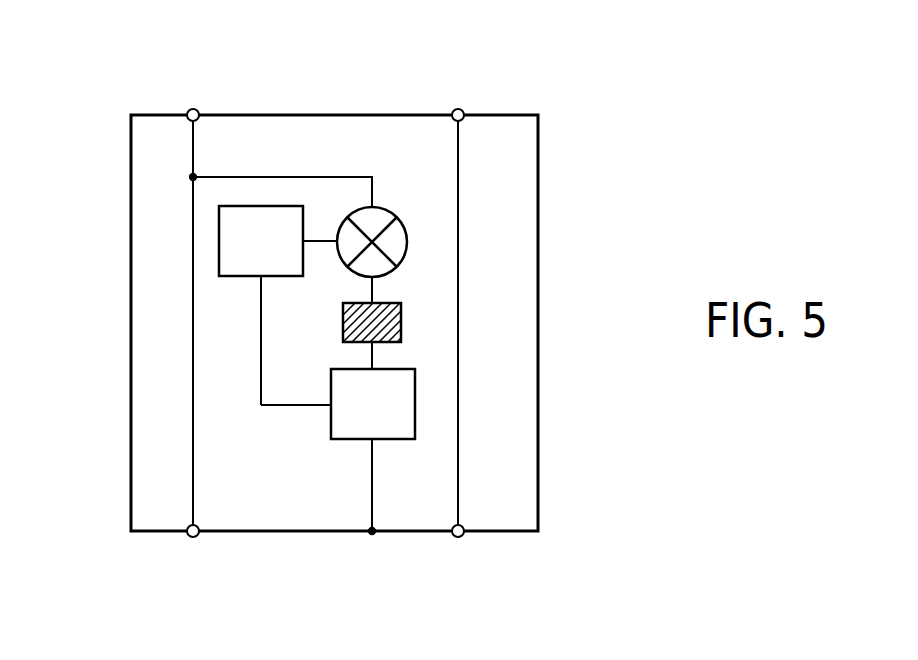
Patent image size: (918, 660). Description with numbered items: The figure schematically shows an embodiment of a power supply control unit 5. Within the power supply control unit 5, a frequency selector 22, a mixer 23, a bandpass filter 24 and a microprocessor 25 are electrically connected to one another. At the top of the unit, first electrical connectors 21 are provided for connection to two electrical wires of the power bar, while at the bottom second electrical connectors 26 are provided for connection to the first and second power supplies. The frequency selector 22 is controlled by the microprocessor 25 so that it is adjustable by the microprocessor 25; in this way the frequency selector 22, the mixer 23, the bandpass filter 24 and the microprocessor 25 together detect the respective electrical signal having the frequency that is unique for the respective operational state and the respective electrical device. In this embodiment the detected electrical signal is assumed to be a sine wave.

The power supply control unit 5 is at (130, 440).
The first electrical connectors 21 is at (200, 88).
The frequency selector 22 is at (219, 262).
The mixer 23 is at (407, 233).
The bandpass filter 24 is at (401, 320).
The microprocessor 25 is at (415, 405).
The second electrical connectors 26 is at (189, 560).